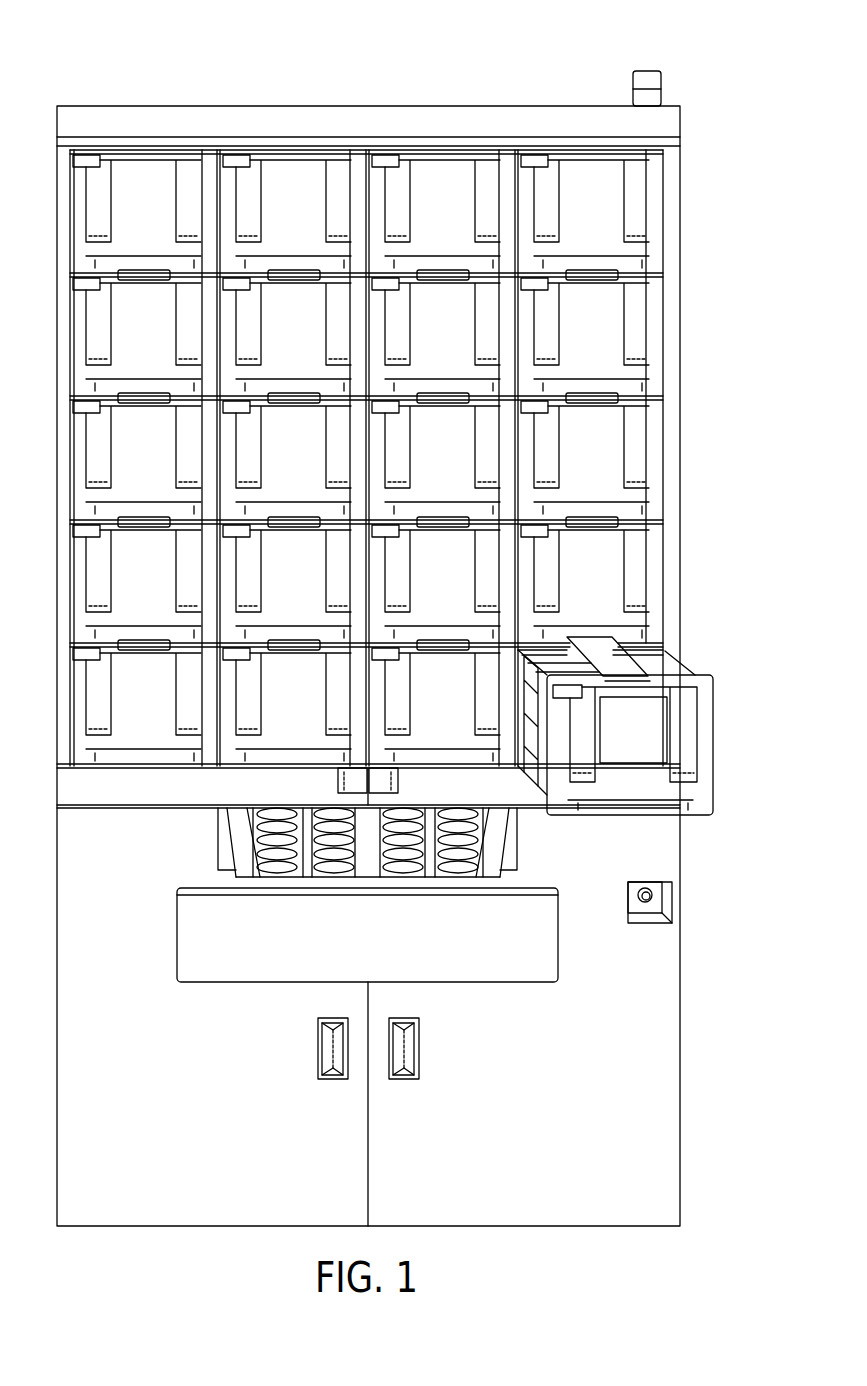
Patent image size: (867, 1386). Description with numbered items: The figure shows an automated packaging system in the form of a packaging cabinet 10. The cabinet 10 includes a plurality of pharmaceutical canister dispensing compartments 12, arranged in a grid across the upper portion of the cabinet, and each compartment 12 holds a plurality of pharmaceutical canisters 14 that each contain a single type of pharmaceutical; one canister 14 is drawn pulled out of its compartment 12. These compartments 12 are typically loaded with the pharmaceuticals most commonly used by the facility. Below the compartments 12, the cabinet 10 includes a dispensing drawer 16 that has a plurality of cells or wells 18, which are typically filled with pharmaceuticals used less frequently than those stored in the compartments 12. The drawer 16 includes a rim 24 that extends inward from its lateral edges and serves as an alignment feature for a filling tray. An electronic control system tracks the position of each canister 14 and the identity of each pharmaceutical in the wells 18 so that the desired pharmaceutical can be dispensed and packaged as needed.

The packaging cabinet 10 is at (687, 51).
The pharmaceutical canister dispensing compartment 12 is at (148, 183).
The pharmaceutical canister 14 is at (688, 672).
The dispensing drawer 16 is at (257, 943).
The well 18 is at (262, 838).
The rim 24 is at (246, 887).